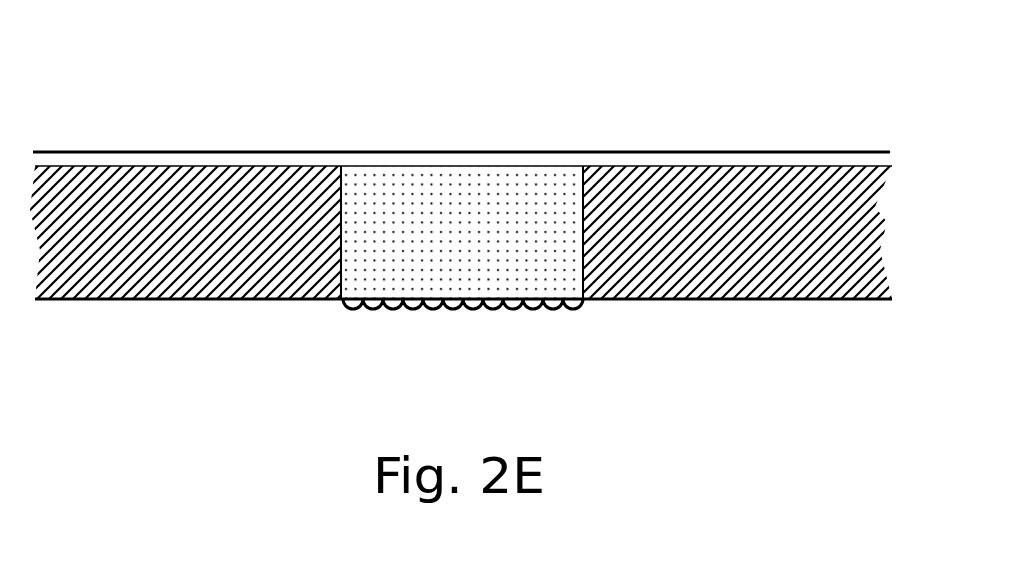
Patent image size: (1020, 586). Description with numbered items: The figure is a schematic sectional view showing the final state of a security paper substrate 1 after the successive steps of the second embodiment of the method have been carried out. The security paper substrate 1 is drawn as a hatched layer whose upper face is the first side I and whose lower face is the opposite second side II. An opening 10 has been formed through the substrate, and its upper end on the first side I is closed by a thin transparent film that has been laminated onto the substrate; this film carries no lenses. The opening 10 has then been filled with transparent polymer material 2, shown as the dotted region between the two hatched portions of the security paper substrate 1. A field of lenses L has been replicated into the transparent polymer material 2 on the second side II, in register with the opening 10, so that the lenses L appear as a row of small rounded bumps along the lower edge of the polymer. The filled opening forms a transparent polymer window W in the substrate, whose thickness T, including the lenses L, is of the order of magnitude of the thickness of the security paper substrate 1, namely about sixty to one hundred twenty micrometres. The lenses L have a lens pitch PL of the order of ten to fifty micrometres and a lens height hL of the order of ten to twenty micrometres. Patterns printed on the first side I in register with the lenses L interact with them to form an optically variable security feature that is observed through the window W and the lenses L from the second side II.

The security paper substrate 1 is at (92, 280).
The transparent polymer material 2 is at (535, 195).
The opening 10 is at (352, 236).
The transparent polymer window W is at (467, 106).
The lenses L is at (506, 322).
The thickness T is at (892, 152).
The lens height hL is at (605, 262).
The lens pitch PL is at (420, 310).
The first side I is at (797, 122).
The second side II is at (802, 340).